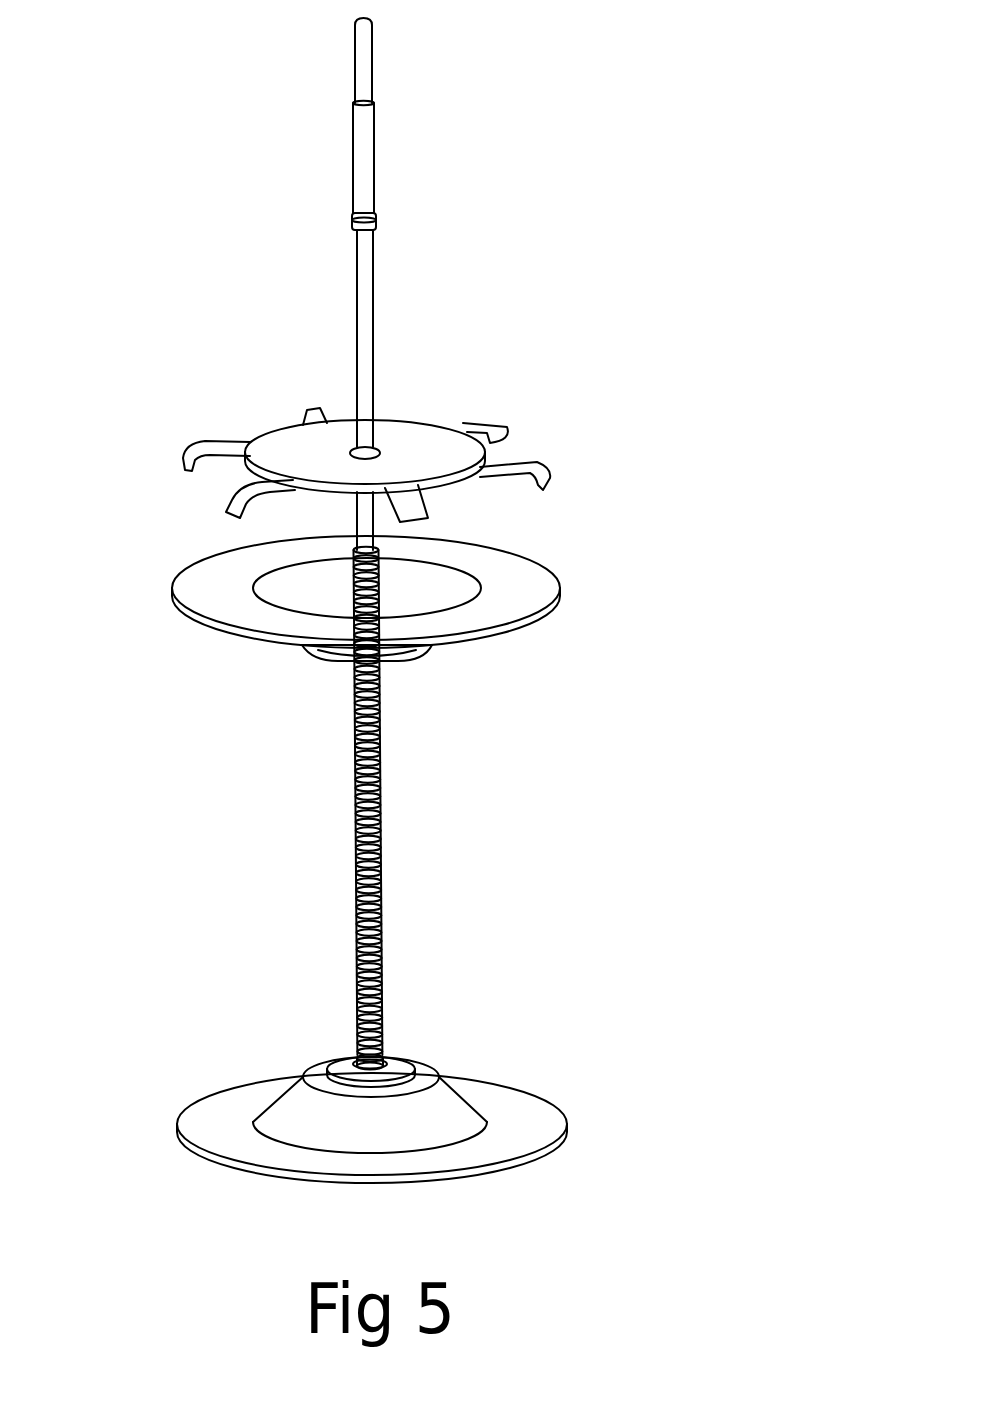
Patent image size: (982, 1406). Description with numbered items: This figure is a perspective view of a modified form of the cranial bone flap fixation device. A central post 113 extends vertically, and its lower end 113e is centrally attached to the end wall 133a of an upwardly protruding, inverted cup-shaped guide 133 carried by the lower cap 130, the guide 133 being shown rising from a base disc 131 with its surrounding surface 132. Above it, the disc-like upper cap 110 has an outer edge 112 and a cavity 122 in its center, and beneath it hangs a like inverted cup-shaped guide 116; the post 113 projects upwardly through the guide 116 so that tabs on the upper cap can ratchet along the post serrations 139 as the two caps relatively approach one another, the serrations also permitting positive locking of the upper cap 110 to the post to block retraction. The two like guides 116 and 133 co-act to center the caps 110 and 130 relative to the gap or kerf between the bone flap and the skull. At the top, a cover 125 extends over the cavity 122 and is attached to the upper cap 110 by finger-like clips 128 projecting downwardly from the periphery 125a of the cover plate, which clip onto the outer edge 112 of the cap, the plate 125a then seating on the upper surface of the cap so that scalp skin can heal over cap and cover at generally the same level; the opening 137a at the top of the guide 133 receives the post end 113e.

The upper cap 110 is at (506, 628).
The outer edge 112 is at (563, 595).
The post 113 is at (383, 544).
The lower end of post 113e is at (383, 1055).
The guide 116 is at (418, 648).
The cavity 122 is at (405, 583).
The cover 125 is at (450, 378).
The periphery of cover plate 125a is at (435, 458).
The finger-like clips 128 is at (508, 430).
The lower cap 130 is at (405, 1093).
The base disc 131 is at (225, 1132).
The base top surface 132 is at (542, 1132).
The inverted cup-shaped guide 133 is at (402, 1110).
The end wall of guide 133a is at (388, 1070).
The rod receiving opening 137a is at (358, 1058).
The post serrations 139 is at (357, 943).